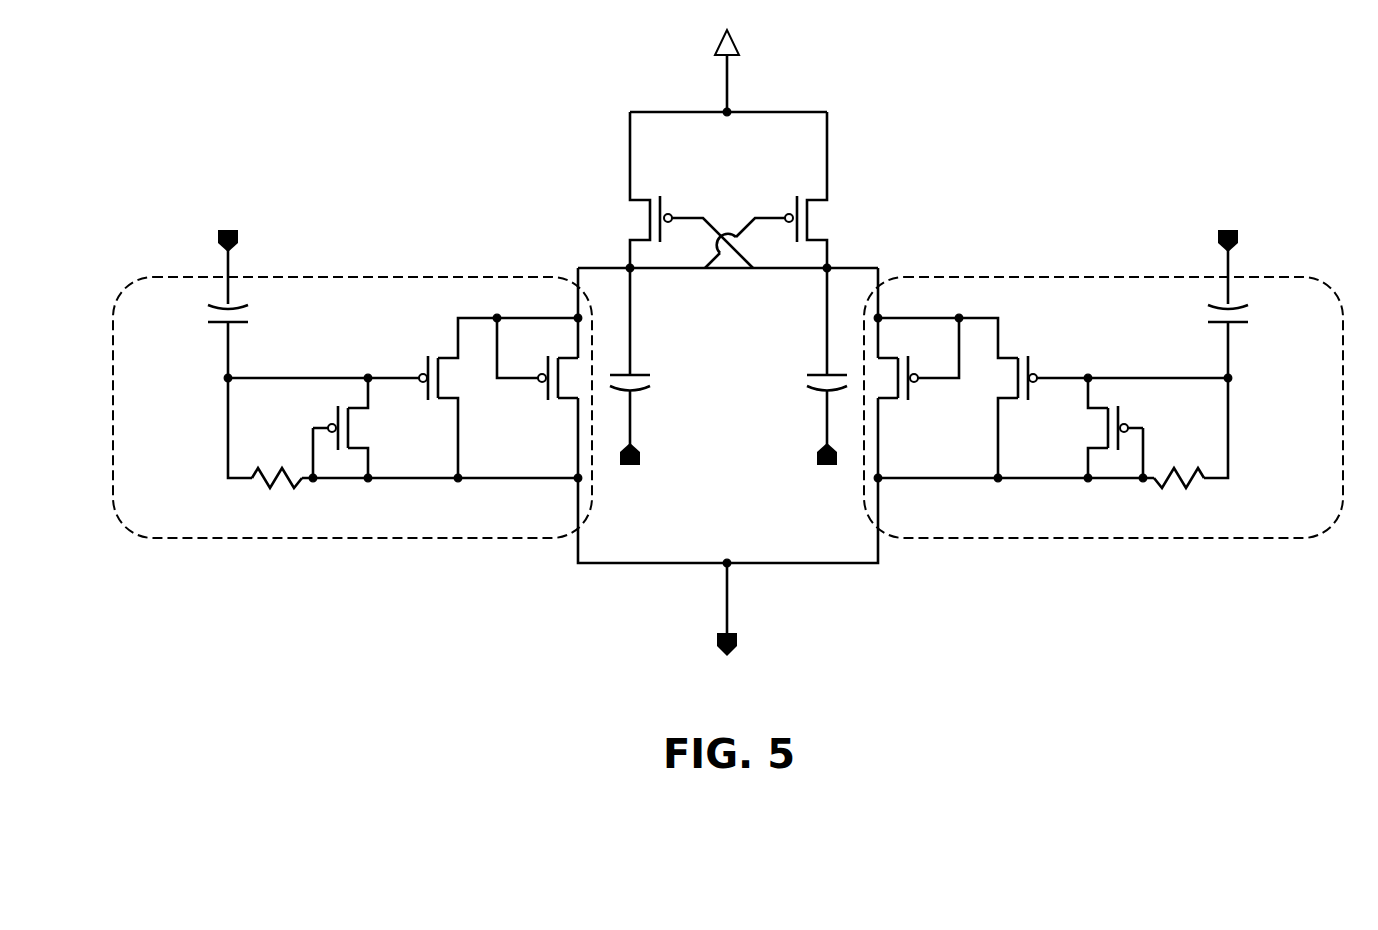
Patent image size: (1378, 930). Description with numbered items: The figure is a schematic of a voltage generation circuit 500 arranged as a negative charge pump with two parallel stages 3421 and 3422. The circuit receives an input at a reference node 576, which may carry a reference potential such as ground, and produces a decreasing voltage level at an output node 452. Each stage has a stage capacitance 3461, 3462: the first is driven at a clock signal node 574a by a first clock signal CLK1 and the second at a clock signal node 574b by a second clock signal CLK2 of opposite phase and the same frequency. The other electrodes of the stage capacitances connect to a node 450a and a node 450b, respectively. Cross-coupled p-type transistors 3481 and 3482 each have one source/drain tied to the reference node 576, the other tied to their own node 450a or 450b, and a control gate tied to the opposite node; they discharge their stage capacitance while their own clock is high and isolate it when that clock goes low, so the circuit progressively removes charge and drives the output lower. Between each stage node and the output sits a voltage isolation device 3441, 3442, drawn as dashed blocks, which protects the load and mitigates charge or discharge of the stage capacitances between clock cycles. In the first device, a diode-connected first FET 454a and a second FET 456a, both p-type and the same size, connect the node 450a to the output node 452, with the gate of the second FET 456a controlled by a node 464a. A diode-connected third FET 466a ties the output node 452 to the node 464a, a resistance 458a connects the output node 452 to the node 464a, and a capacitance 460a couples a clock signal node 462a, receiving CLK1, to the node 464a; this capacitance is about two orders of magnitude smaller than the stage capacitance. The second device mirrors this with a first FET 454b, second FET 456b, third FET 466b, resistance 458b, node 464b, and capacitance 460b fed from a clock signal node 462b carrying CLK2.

The voltage generation circuit 500 is at (468, 686).
The reference node 576 is at (718, 40).
The output node 452 is at (718, 640).
The cross-coupled transistor 3481 is at (643, 197).
The cross-coupled transistor 3482 is at (815, 197).
The stage 3421 is at (538, 200).
The stage 3422 is at (918, 200).
The node 450a is at (630, 266).
The node 450b is at (827, 266).
The stage capacitance 3461 is at (653, 372).
The stage capacitance 3462 is at (810, 372).
The clock signal node 574a is at (641, 450).
The clock signal node 574b is at (816, 455).
The voltage isolation device 3441 is at (315, 540).
The voltage isolation device 3442 is at (1141, 540).
The clock signal node 462a is at (222, 240).
The clock signal node 462b is at (1234, 240).
The capacitance 460a is at (213, 326).
The capacitance 460b is at (1243, 326).
The node 464a is at (224, 381).
The node 464b is at (1232, 381).
The resistance 458a is at (263, 486).
The resistance 458b is at (1193, 486).
The third FET 466a is at (352, 410).
The third FET 466b is at (1104, 410).
The second FET 456a is at (441, 358).
The second FET 456b is at (1015, 358).
The first FET 454a is at (566, 402).
The first FET 454b is at (890, 402).